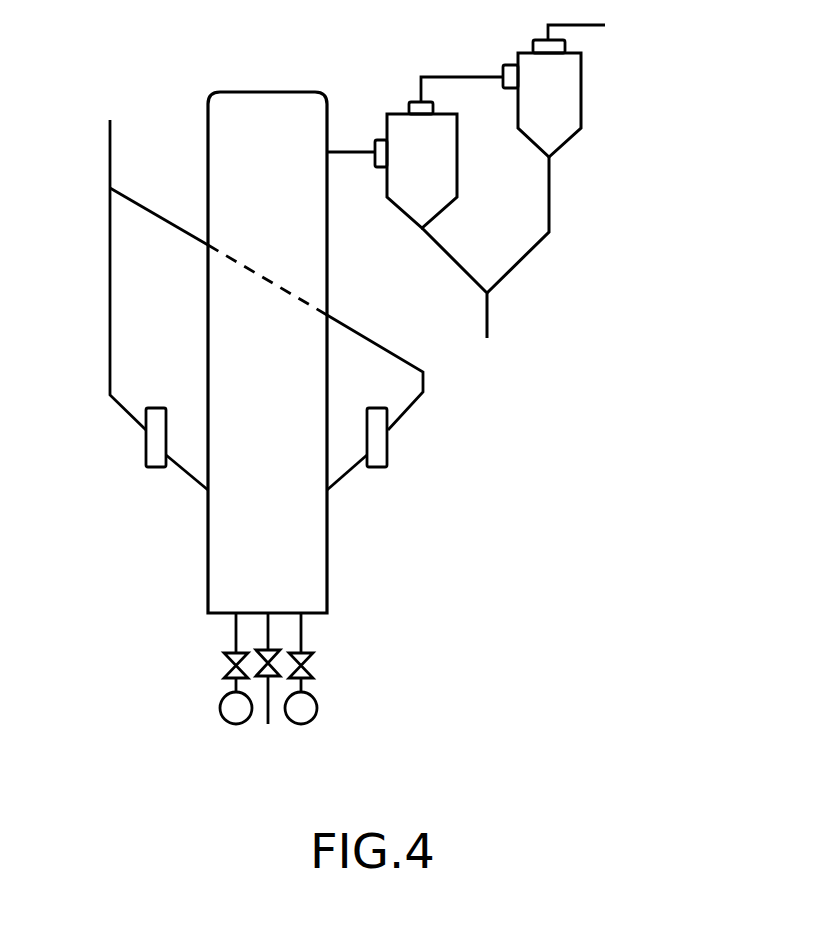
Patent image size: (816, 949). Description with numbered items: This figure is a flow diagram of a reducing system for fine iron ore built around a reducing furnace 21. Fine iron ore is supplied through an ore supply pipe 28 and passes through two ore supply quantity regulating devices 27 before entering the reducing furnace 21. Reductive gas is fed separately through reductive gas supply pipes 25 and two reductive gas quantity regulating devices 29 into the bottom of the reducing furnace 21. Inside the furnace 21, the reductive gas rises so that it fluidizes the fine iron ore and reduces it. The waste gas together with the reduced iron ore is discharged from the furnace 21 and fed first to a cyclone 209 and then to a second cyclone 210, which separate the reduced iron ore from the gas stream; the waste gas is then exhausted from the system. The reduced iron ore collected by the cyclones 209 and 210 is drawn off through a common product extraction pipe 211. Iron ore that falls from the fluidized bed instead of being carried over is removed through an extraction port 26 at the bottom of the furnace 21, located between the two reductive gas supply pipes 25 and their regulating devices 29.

The reducing furnace 21 is at (300, 92).
The reductive gas supply pipes 25 is at (220, 710).
The extraction port 26 is at (270, 640).
The ore supply quantity regulating devices 27 is at (146, 455).
The ore supply pipe 28 is at (110, 158).
The reductive gas quantity regulating devices 29 is at (224, 666).
The cyclone 209 is at (458, 172).
The cyclone 210 is at (582, 103).
The product extraction pipe 211 is at (490, 318).